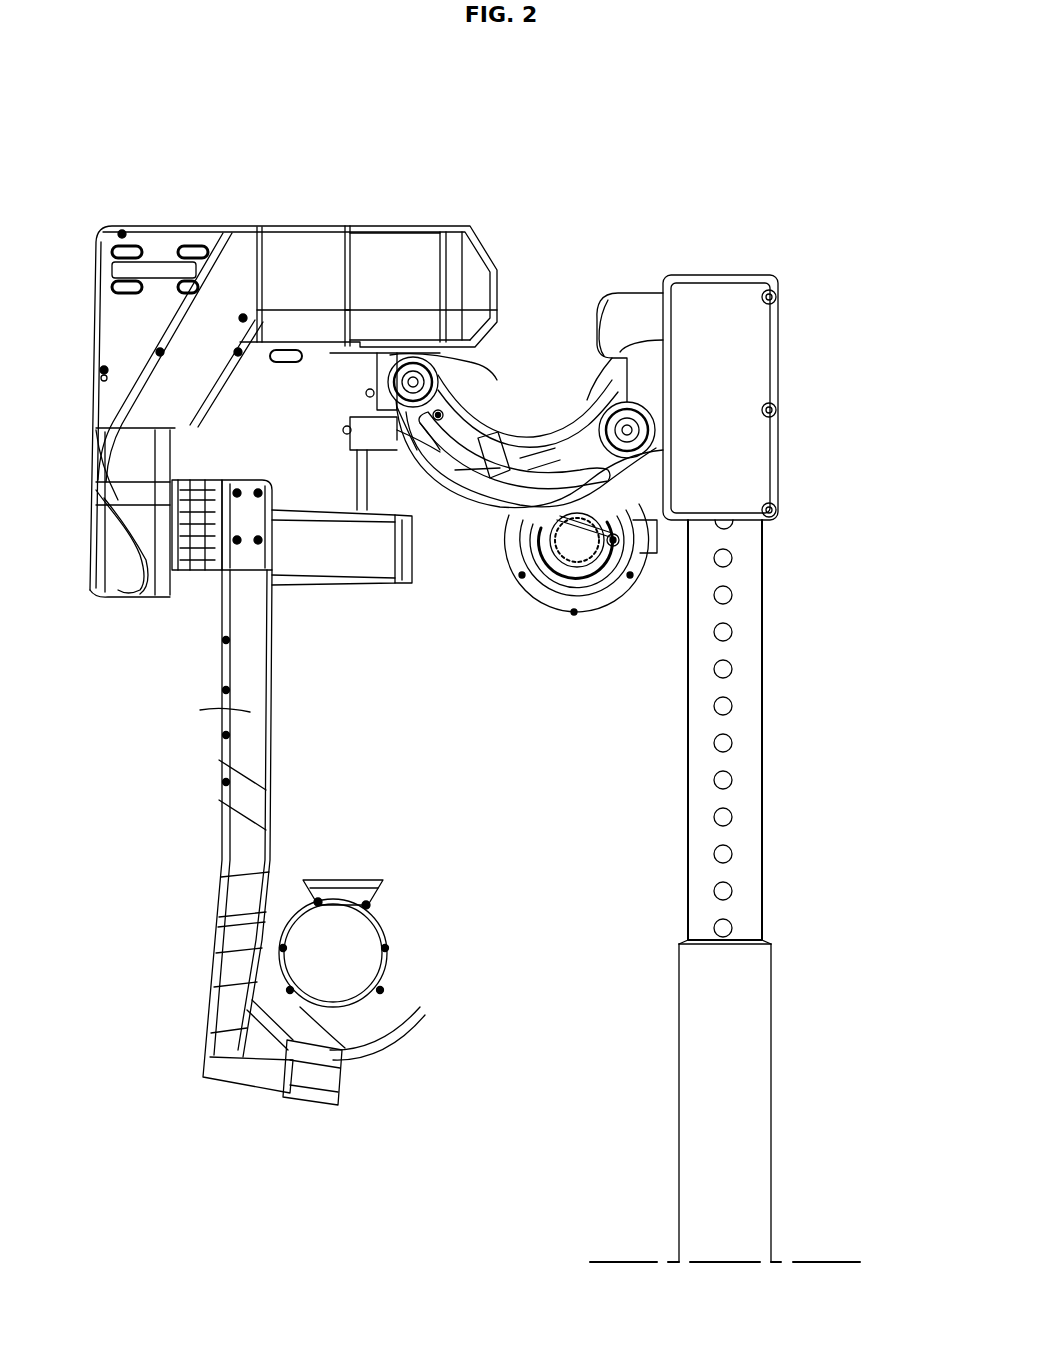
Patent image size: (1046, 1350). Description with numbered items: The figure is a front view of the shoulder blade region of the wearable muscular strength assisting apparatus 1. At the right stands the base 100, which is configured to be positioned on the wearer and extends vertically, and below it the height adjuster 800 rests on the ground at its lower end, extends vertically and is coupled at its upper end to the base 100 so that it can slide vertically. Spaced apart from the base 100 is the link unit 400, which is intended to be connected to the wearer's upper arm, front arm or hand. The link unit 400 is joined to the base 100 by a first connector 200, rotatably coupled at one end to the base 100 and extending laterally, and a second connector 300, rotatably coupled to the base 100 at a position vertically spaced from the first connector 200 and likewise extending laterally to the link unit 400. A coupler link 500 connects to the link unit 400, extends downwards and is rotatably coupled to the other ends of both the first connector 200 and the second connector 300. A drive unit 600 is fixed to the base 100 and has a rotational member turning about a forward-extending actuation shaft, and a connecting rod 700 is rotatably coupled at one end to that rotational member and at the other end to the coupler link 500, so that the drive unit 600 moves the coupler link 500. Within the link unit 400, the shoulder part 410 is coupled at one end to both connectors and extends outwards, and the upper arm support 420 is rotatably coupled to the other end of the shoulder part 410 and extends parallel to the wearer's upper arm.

The wearable muscular strength assisting apparatus 1 is at (116, 208).
The base 100 is at (722, 300).
The first connector 200 is at (462, 478).
The second connector 300 is at (550, 432).
The link unit 400 is at (244, 208).
The shoulder part 410 is at (332, 250).
The upper arm support 420 is at (245, 714).
The coupler link 500 is at (500, 403).
The drive unit 600 is at (592, 605).
The connecting rod 700 is at (500, 467).
The height adjuster 800 is at (745, 1078).